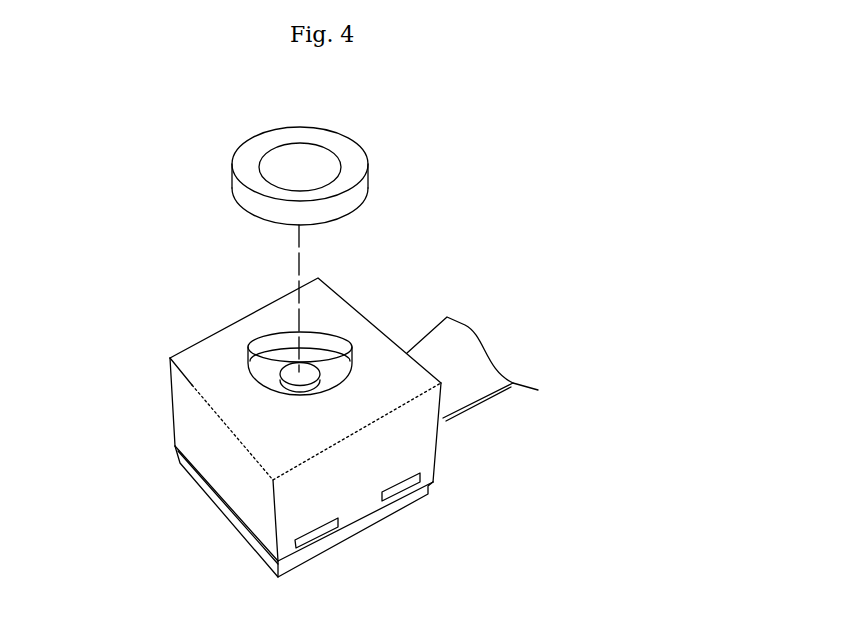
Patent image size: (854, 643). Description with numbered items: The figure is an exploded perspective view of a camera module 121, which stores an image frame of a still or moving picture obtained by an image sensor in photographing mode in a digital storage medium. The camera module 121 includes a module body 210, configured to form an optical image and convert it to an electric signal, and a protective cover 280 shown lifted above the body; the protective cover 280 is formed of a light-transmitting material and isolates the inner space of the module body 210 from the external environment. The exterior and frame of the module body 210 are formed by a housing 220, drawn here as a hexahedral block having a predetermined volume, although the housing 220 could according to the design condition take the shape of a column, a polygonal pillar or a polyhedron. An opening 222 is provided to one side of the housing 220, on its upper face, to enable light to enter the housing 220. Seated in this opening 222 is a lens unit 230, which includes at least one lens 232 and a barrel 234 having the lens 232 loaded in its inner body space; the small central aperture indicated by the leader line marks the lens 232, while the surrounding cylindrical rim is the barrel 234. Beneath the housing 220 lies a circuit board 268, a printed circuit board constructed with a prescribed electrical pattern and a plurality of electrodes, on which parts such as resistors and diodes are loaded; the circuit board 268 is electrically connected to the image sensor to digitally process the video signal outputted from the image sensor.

The camera module 121 is at (132, 168).
The protective cover 280 is at (222, 176).
The module body 210 is at (236, 306).
The housing 220 is at (372, 323).
The opening 222 is at (315, 337).
The lens unit 230 is at (82, 328).
The barrel 234 is at (275, 356).
The lens 232 is at (288, 382).
The circuit board 268 is at (355, 528).